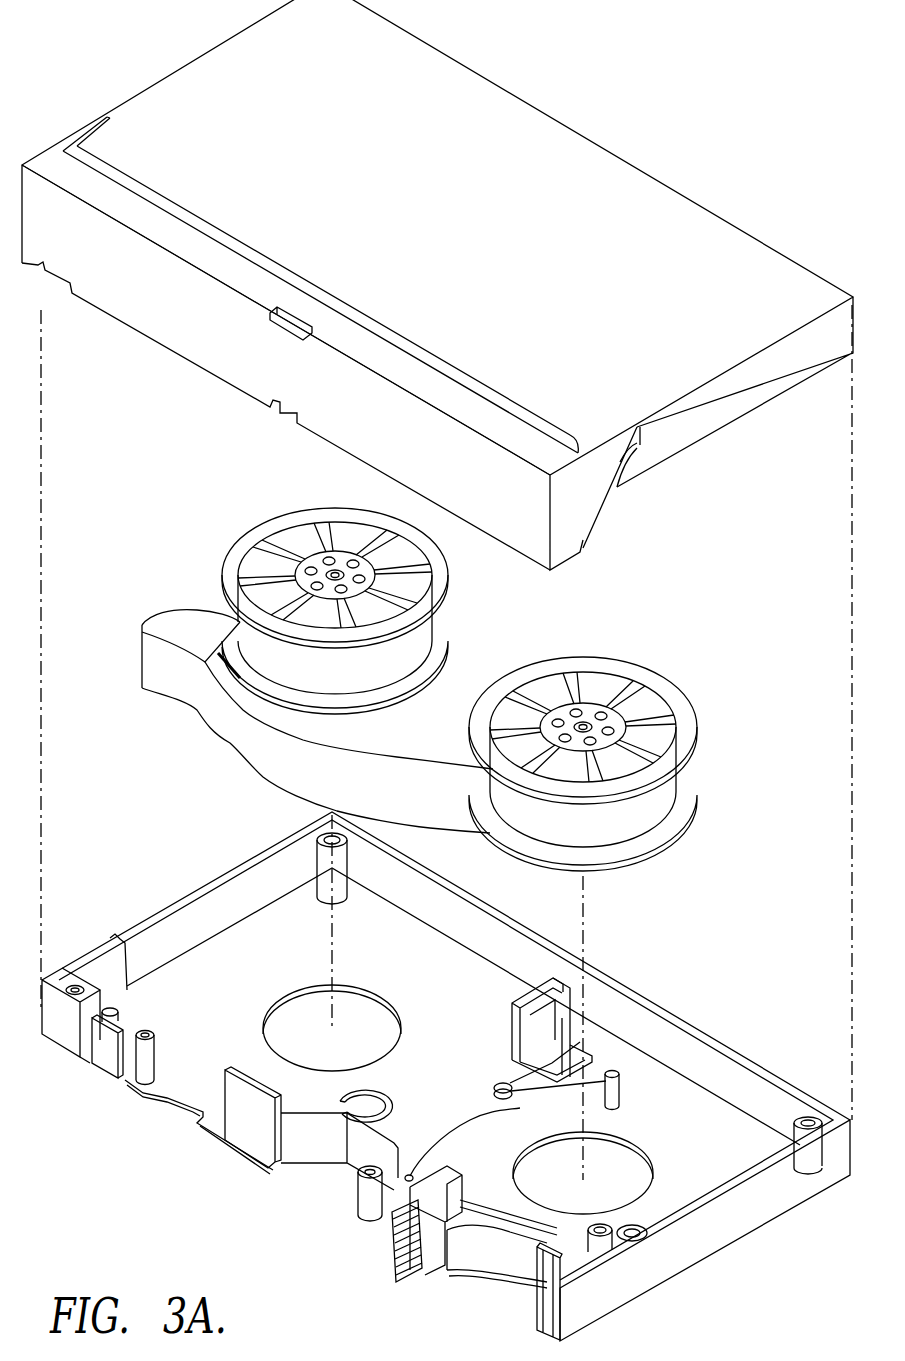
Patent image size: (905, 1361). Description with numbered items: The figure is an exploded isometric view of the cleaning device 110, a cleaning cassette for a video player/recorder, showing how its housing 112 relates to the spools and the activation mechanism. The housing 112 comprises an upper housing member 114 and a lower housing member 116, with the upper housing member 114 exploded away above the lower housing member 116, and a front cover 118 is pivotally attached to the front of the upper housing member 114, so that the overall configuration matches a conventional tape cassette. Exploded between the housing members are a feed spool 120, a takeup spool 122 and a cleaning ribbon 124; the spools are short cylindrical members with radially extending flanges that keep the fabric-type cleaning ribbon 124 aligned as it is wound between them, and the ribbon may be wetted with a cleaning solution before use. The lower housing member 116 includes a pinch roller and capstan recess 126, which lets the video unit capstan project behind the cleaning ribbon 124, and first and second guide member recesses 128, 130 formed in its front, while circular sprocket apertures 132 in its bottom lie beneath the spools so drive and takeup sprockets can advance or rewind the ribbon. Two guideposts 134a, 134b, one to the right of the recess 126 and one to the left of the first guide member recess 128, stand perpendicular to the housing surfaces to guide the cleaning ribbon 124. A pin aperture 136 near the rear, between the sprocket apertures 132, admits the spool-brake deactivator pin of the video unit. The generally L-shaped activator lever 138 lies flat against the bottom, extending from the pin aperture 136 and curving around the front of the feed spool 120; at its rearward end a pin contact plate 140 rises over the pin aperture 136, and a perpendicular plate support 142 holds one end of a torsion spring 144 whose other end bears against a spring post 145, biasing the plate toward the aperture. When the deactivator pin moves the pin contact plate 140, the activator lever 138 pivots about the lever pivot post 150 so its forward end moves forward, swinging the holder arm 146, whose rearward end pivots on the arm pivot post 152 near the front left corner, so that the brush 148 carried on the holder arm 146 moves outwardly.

The cleaning device 110 is at (124, 1187).
The housing 112 is at (705, 180).
The upper housing member 114 is at (523, 143).
The lower housing member 116 is at (690, 1113).
The front cover 118 is at (152, 312).
The feed spool 120 is at (537, 665).
The takeup spool 122 is at (255, 530).
The cleaning ribbon 124 is at (235, 735).
The pinch roller and capstan recess 126 is at (163, 1103).
The first guide member recess 128 is at (307, 1143).
The second guide member recess 130 is at (525, 1270).
The sprocket apertures 132 is at (380, 995).
The guidepost 134a is at (137, 1070).
The guidepost 134b is at (353, 1203).
The pin aperture 136 is at (503, 1075).
The activator lever 138 is at (470, 1123).
The pin contact plate 140 is at (552, 995).
The plate support 142 is at (557, 1027).
The torsion spring 144 is at (597, 1073).
The spring post 145 is at (630, 1087).
The holder arm 146 is at (530, 1230).
The brush 148 is at (393, 1260).
The lever pivot post 150 is at (447, 1133).
The arm pivot post 152 is at (635, 1243).